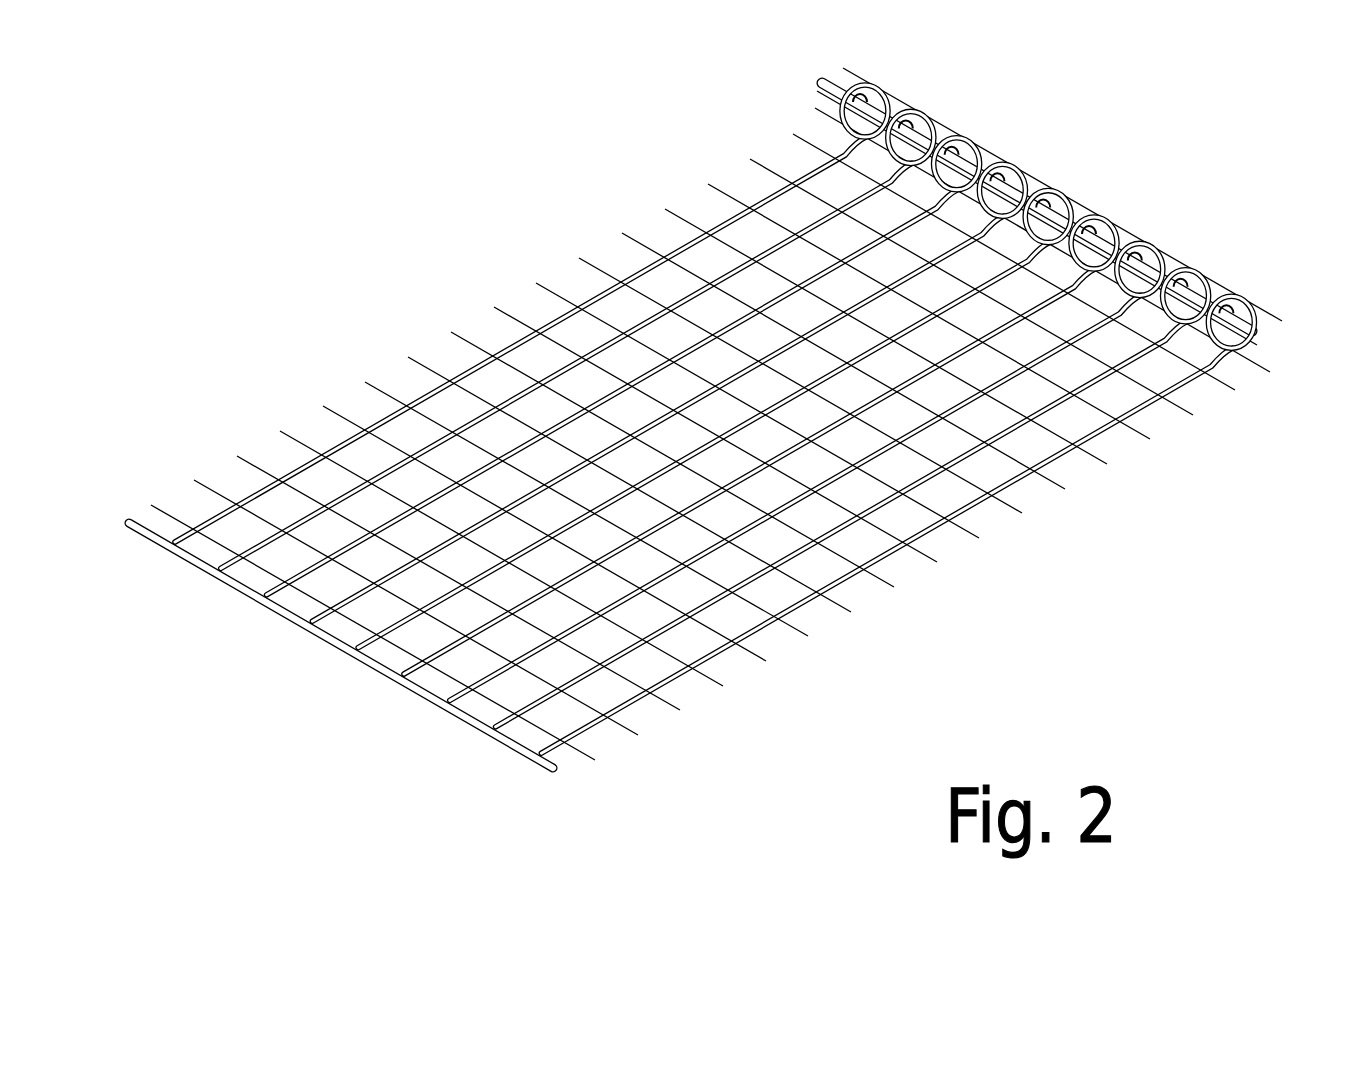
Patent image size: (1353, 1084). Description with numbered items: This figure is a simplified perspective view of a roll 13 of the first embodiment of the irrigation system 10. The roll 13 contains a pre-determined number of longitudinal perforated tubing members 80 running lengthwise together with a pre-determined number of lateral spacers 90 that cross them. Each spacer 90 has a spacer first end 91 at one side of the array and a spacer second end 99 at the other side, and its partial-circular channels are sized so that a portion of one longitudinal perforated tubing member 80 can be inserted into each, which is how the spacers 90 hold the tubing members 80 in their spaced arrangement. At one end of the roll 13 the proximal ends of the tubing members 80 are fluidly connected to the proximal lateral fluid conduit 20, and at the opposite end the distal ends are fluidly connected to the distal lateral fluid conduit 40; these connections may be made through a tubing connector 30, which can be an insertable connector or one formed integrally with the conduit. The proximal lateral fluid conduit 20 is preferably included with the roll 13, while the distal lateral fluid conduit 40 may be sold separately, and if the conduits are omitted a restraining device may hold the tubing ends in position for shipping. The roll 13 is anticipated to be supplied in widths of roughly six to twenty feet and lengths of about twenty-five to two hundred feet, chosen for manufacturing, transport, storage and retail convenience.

The irrigation system 10 is at (542, 230).
The roll 13 is at (1278, 342).
The proximal lateral fluid conduit 20 is at (1170, 245).
The tubing connector 30 is at (282, 602).
The distal lateral fluid conduit 40 is at (457, 712).
The longitudinal perforated tubing member 80 is at (910, 553).
The spacer 90 is at (844, 607).
The spacer first end 91 is at (423, 362).
The spacer second end 99 is at (840, 602).